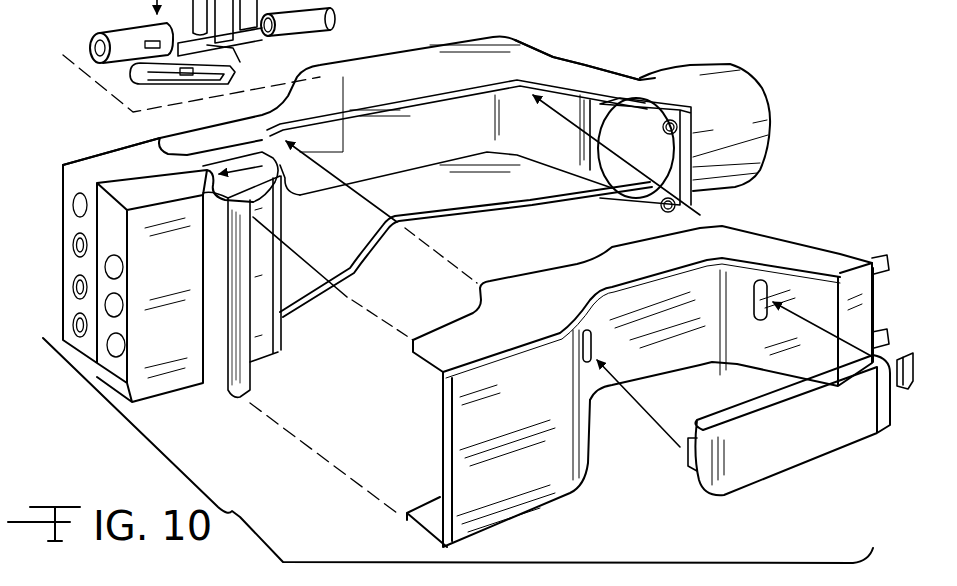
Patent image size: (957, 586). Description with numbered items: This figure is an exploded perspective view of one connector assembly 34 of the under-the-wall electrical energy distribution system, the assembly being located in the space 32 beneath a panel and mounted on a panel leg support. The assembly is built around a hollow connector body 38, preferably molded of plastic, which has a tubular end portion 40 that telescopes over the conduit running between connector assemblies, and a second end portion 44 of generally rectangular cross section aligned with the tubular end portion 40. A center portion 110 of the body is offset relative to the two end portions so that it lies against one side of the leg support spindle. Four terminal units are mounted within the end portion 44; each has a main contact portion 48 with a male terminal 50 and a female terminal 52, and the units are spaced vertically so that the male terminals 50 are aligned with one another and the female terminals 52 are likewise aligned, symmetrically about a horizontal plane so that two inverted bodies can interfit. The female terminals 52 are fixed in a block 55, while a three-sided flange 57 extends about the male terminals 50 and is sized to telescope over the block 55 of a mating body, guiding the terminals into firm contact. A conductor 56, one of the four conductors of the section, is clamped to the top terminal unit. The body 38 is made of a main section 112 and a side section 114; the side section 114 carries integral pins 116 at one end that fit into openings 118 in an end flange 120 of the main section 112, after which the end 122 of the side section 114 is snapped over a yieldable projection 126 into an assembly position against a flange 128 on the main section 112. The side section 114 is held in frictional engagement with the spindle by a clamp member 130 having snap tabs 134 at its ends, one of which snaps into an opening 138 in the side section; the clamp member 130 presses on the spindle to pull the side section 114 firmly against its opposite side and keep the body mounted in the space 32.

The space 32 is at (127, 40).
The connector assembly 34 is at (68, 147).
The connector body 38 is at (626, 61).
The tubular end portion 40 is at (737, 90).
The second end portion 44 is at (124, 168).
The main contact portion 48 is at (240, 52).
The male terminal 50 is at (165, 82).
The female terminal 52 is at (44, 338).
The block 55 is at (68, 224).
The conductor 56 is at (318, 34).
The three-sided flange 57 is at (127, 268).
The center portion 110 is at (413, 70).
The main section 112 is at (558, 58).
The side section 114 is at (663, 327).
The integral pins 116 is at (887, 341).
The openings 118 is at (677, 125).
The end flange 120 is at (622, 243).
The end of the side section 122 is at (460, 417).
The yieldable projection 126 is at (252, 381).
The flange 128 is at (266, 327).
The clamp member 130 is at (763, 460).
The snap tabs 134 is at (685, 457).
The opening 138 is at (583, 366).